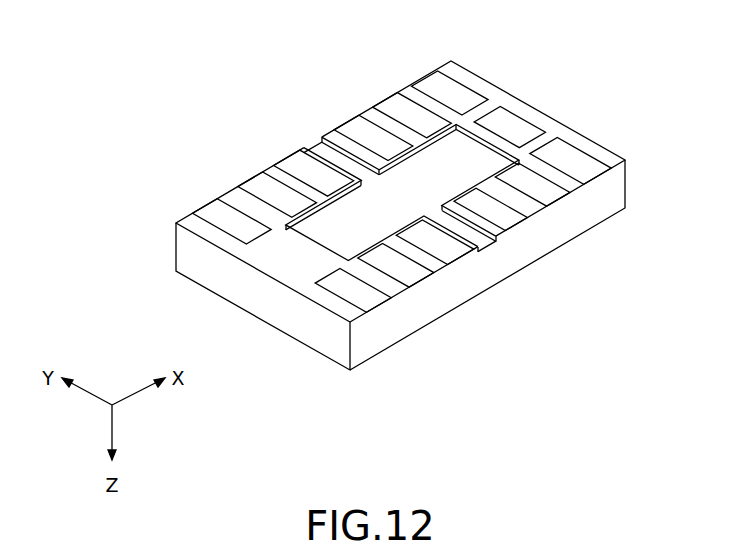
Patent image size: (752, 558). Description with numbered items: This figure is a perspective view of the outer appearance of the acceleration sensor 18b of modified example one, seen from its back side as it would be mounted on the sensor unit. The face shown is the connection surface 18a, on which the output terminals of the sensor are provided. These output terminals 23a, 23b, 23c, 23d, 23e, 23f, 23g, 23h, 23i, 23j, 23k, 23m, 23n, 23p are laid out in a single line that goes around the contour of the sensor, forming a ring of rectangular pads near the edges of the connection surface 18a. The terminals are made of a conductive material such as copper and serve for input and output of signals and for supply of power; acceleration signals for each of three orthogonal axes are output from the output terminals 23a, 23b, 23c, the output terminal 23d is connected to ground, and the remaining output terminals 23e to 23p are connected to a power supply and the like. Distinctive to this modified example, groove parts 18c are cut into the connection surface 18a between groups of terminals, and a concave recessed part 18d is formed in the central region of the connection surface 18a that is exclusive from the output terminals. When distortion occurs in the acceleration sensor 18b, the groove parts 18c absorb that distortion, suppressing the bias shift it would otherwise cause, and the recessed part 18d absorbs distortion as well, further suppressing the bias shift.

The connection surface 18a is at (480, 73).
The acceleration sensor 18b is at (627, 184).
The groove parts 18c is at (328, 135).
The recessed part 18d is at (323, 232).
The output terminal 23a is at (264, 257).
The output terminal 23b is at (220, 205).
The output terminal 23c is at (263, 178).
The output terminal 23d is at (310, 149).
The output terminal 23e is at (355, 127).
The output terminal 23f is at (405, 93).
The output terminal 23g is at (436, 73).
The output terminal 23h is at (541, 108).
The output terminal 23i is at (576, 153).
The output terminal 23j is at (558, 194).
The output terminal 23k is at (506, 219).
The output terminal 23m is at (468, 245).
The output terminal 23n is at (423, 274).
The output terminal 23p is at (375, 300).